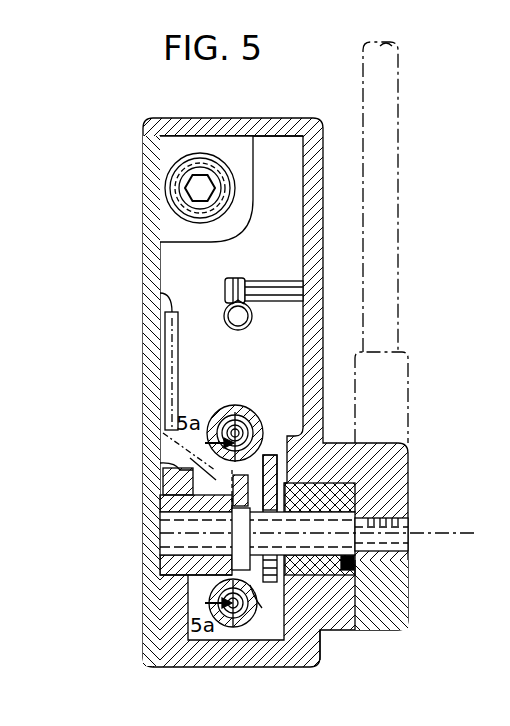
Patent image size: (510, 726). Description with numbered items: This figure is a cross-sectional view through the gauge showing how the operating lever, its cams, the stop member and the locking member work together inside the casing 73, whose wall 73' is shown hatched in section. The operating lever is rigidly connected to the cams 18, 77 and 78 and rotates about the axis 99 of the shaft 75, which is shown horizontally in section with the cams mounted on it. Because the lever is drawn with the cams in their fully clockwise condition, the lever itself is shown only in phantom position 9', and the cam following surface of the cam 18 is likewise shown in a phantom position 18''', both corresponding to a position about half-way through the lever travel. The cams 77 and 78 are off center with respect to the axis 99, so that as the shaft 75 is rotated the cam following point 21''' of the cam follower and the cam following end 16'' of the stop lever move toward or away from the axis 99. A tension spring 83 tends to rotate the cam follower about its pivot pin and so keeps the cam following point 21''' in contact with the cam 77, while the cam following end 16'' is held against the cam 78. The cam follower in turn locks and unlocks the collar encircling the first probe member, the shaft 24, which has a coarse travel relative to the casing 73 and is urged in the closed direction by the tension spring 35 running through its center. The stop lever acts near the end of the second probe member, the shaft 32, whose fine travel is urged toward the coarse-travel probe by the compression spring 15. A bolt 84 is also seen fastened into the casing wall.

The casing 73 is at (231, 113).
The housing 73' is at (250, 392).
The phantom position of operating lever 9' is at (398, 242).
The bolt 84 is at (275, 286).
The tension spring 83 is at (230, 313).
The phantom position of cam following surface 18''' is at (125, 358).
The shaft 24 is at (248, 410).
The tension spring 35 is at (235, 412).
The cam following point 21''' is at (282, 485).
The cam following end 16'' is at (154, 456).
The axis 99 is at (418, 534).
The shaft 75 is at (160, 546).
The cam 18 is at (161, 580).
The cam 78 is at (207, 598).
The cam 77 is at (321, 633).
The shaft 32 is at (230, 615).
The compression spring 15 is at (255, 620).